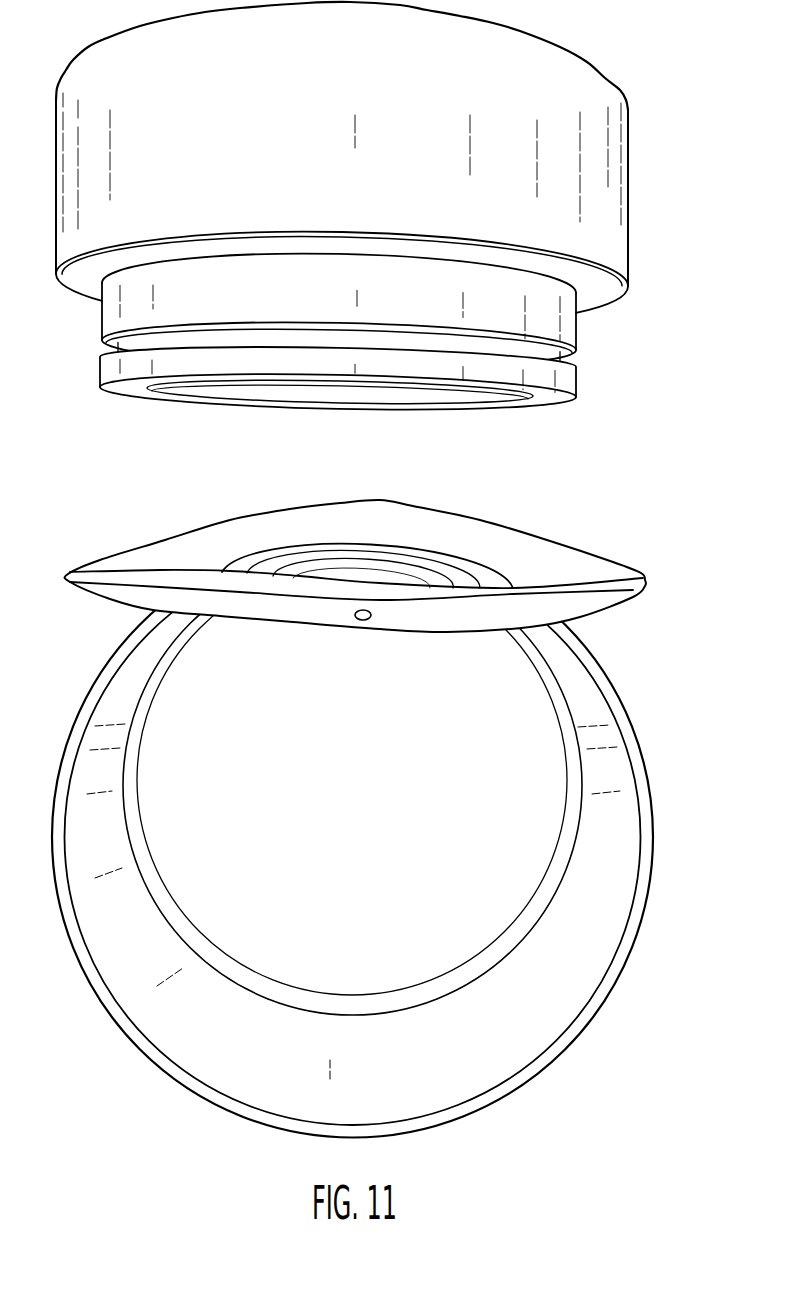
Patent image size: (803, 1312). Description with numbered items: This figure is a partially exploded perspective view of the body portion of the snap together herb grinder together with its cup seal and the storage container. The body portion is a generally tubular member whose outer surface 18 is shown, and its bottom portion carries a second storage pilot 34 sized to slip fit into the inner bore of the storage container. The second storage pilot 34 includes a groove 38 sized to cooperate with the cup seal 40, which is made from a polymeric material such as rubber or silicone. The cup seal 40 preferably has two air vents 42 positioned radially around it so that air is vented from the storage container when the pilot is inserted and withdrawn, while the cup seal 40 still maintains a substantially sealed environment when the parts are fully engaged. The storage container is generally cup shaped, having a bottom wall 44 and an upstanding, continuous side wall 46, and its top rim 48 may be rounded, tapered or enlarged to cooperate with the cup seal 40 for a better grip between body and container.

The outer surface 18 is at (612, 197).
The second storage pilot 34 is at (563, 334).
The groove 38 is at (560, 360).
The cup seal 40 is at (608, 573).
The air vent 42 is at (367, 609).
The bottom wall 44 is at (368, 798).
The side wall 46 is at (547, 1000).
The top rim 48 is at (652, 852).